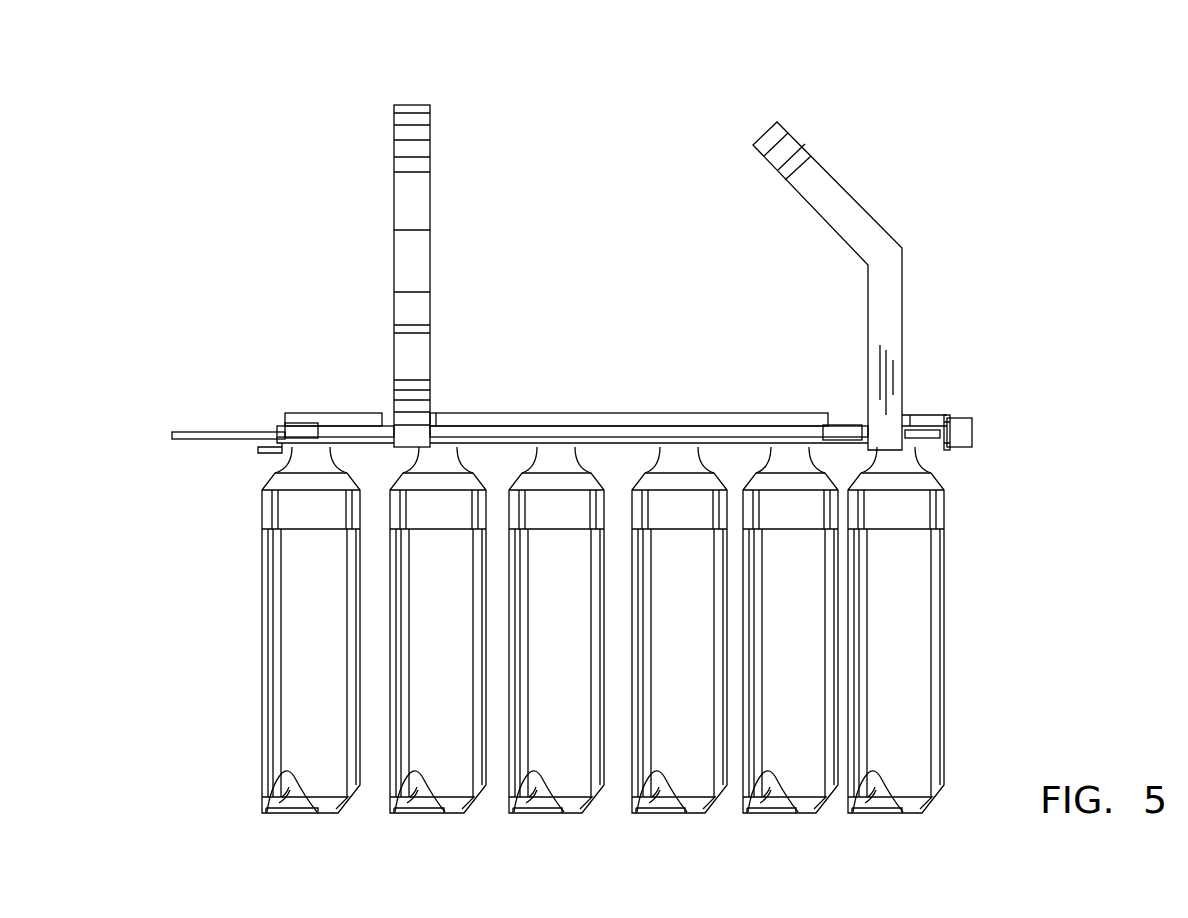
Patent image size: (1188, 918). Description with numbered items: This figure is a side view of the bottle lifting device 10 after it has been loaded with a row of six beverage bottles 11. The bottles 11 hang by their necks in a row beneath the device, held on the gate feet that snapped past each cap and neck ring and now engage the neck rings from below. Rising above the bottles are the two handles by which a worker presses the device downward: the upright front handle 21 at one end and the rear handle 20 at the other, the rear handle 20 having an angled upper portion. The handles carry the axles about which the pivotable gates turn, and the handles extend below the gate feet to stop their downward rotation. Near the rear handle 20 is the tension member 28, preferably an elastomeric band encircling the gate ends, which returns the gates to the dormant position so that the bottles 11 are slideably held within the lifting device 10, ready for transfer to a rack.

The bottle lifting device 10 is at (466, 72).
The beverage bottles 11 is at (930, 627).
The rear handle 20 is at (856, 214).
The front handle 21 is at (424, 189).
The tension member 28 is at (947, 416).